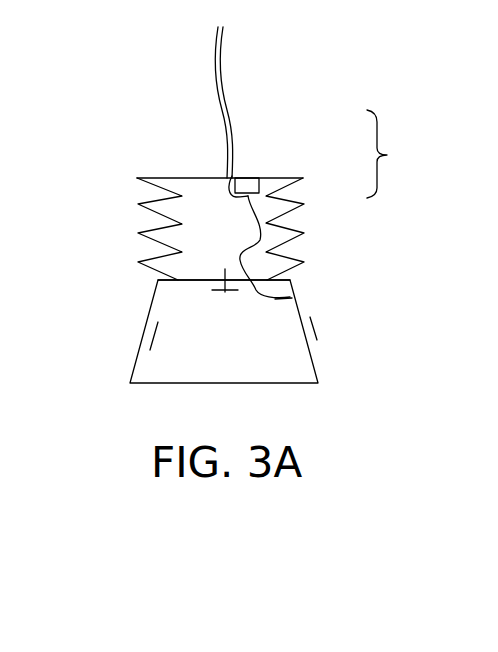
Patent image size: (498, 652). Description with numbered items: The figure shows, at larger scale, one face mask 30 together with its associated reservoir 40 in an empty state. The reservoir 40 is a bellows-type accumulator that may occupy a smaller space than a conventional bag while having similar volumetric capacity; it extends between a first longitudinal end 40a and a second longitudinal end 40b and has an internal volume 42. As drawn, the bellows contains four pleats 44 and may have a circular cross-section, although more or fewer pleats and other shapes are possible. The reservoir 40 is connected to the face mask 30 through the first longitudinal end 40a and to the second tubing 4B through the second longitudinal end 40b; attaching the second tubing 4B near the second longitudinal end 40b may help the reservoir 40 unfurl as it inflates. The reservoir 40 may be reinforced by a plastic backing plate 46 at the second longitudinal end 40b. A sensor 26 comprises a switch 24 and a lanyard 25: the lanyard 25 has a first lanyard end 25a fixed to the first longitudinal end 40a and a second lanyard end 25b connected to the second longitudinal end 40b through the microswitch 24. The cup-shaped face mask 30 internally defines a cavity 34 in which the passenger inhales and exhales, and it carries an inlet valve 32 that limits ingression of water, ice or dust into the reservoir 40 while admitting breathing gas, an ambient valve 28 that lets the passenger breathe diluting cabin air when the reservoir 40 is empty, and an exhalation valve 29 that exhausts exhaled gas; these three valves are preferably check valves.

The second tubing 4B is at (214, 68).
The second longitudinal end 40b is at (135, 177).
The first longitudinal end 40a is at (147, 273).
The pleats 44 is at (145, 195).
The reservoir 40 is at (306, 248).
The internal volume 42 is at (200, 202).
The plastic backing plate 46 is at (205, 177).
The switch 24 is at (250, 178).
The sensor 26 is at (394, 154).
The second lanyard end 25b is at (232, 176).
The lanyard 25 is at (262, 222).
The first lanyard end 25a is at (292, 298).
The inlet valve 32 is at (217, 290).
The face mask 30 is at (307, 388).
The ambient valve 28 is at (150, 328).
The exhalation valve 29 is at (295, 333).
The cavity 34 is at (173, 365).